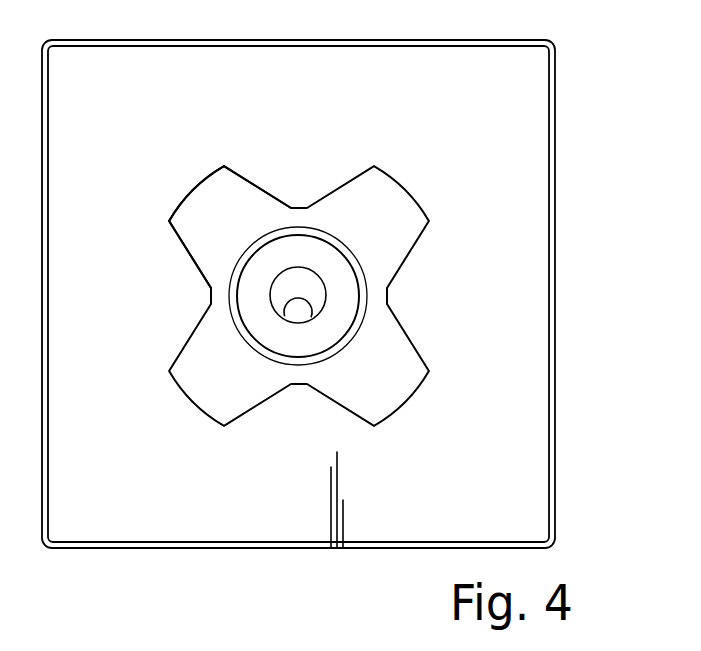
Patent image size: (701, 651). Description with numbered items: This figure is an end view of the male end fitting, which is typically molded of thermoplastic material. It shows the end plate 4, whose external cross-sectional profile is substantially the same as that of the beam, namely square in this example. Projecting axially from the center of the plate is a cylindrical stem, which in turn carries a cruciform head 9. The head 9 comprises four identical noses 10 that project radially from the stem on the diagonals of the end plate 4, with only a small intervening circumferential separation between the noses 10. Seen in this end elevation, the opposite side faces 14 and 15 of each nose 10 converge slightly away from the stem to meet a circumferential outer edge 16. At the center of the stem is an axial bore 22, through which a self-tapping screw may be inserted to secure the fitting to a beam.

The end plate 4 is at (557, 183).
The cruciform head 9 is at (291, 269).
The nose 10 is at (205, 213).
The side face 14 is at (185, 253).
The side face 15 is at (253, 180).
The circumferential outer edge 16 is at (200, 180).
The axial bore 22 is at (307, 313).